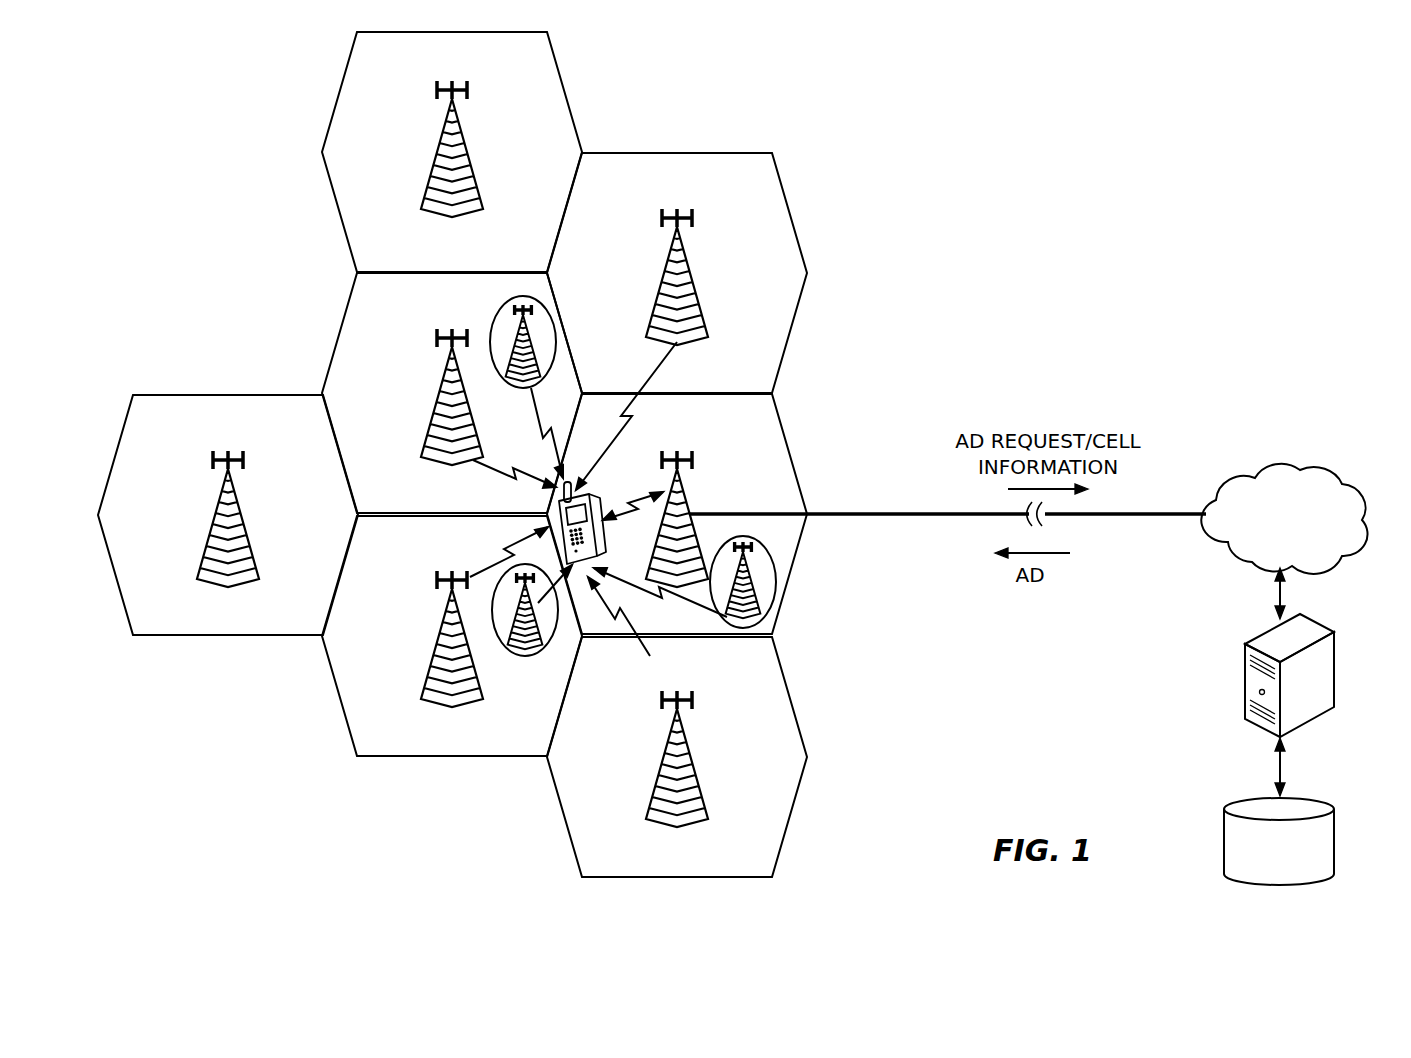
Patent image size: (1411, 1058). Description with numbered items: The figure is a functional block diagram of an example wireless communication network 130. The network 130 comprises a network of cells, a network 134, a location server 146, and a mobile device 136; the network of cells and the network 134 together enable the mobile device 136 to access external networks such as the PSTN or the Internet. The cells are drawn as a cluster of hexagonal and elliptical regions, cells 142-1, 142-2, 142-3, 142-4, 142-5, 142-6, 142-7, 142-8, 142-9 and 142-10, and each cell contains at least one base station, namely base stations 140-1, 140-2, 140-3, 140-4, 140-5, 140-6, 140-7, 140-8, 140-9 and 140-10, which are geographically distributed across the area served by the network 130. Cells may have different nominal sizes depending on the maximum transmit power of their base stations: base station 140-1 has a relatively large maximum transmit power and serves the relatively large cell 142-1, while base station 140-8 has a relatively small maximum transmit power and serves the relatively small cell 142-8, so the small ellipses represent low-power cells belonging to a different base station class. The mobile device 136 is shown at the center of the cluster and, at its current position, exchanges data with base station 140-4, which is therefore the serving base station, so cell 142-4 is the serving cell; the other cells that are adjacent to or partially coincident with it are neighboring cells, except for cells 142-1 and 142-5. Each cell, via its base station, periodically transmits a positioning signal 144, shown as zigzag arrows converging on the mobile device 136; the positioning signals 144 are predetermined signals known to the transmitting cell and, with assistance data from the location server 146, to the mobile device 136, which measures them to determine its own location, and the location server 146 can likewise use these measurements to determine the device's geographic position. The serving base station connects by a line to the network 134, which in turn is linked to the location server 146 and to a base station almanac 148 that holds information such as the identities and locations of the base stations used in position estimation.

The wireless communication network 130 is at (1202, 199).
The network 134 is at (1305, 466).
The mobile device 136 is at (598, 549).
The base station 140-1 is at (452, 84).
The base station 140-2 is at (677, 210).
The base station 140-3 is at (452, 330).
The base station 140-4 is at (680, 453).
The base station 140-5 is at (228, 452).
The base station 140-6 is at (452, 572).
The base station 140-7 is at (687, 824).
The base station 140-8 is at (531, 343).
The base station 140-9 is at (755, 623).
The base station 140-10 is at (527, 656).
The cell 142-1 is at (557, 66).
The cell 142-2 is at (780, 178).
The cell 142-3 is at (350, 300).
The cell 142-4 is at (780, 416).
The cell 142-5 is at (208, 393).
The cell 142-6 is at (430, 758).
The cell 142-7 is at (559, 800).
The cell 142-8 is at (500, 304).
The cell 142-9 is at (778, 590).
The cell 142-10 is at (555, 632).
The positioning signal 144 is at (652, 380).
The location server 146 is at (1312, 623).
The base station almanac (BSA) 148 is at (1312, 798).